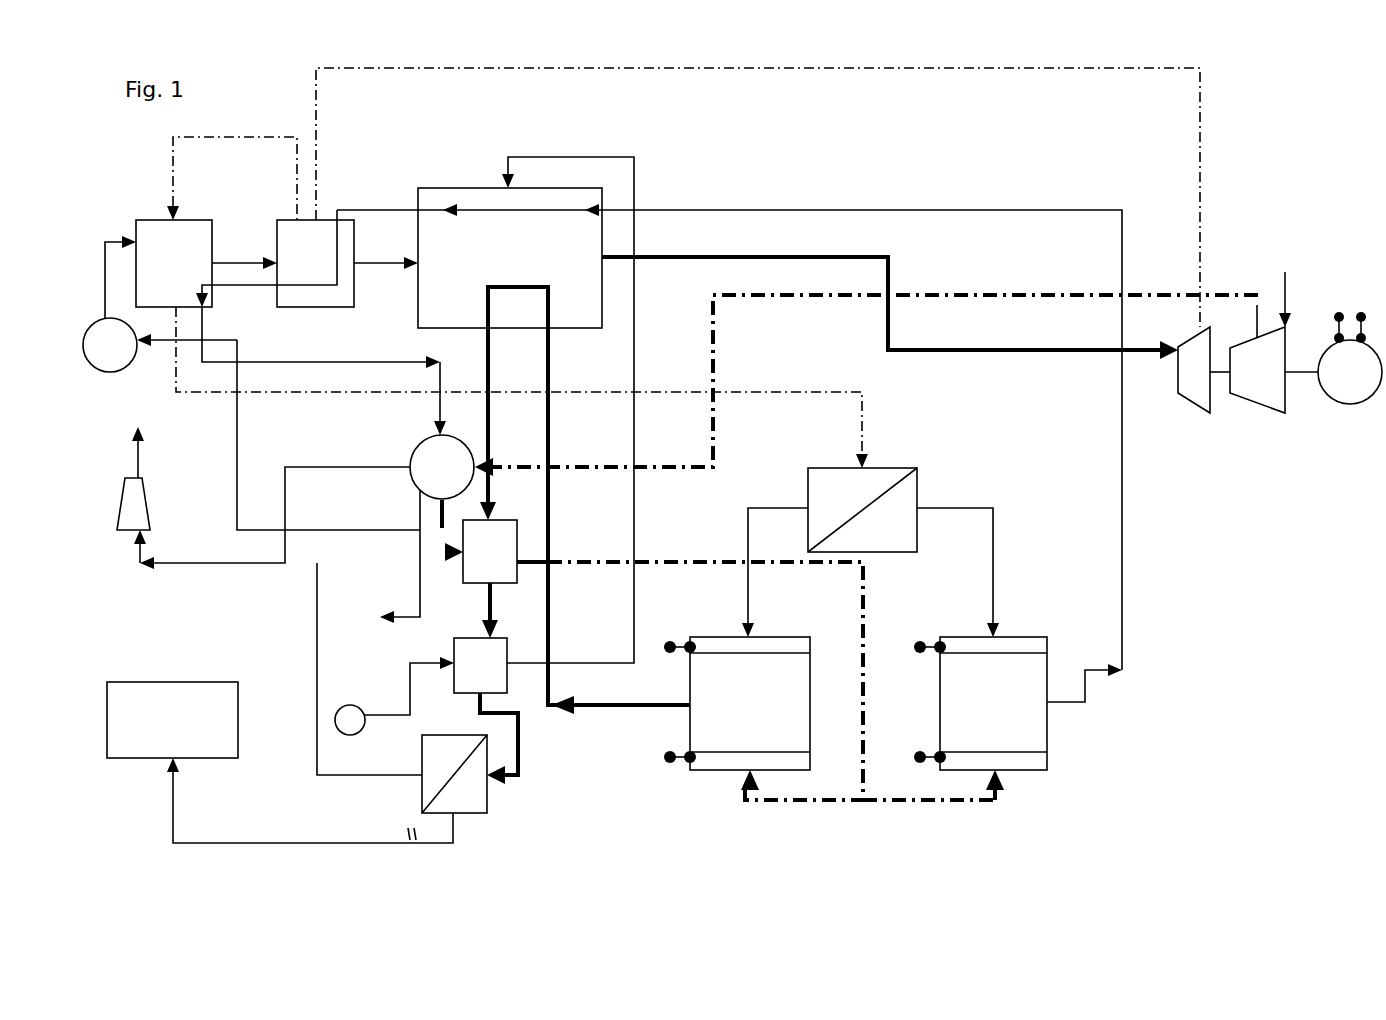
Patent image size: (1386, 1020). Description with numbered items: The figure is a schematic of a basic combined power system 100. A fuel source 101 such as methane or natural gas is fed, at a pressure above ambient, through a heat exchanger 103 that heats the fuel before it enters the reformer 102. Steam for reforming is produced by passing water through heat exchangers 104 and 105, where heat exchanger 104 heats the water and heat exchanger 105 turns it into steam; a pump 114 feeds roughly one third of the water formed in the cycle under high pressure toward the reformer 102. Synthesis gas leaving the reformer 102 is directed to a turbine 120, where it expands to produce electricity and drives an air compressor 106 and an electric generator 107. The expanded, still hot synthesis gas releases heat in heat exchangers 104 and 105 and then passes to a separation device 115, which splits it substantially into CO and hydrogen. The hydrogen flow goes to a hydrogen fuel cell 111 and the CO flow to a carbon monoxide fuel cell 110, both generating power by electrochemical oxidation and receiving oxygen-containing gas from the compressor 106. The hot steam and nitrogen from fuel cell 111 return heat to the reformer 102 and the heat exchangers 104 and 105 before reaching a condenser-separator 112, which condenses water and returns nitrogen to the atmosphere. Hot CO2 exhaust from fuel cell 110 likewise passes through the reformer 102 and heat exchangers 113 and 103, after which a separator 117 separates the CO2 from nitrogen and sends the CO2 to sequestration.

The combined power system 100 is at (732, 490).
The fuel source 101 is at (350, 720).
The reformer 102 is at (510, 258).
The heat exchanger 103 is at (480, 665).
The heat exchanger 104 is at (174, 263).
The heat exchanger 105 is at (315, 263).
The air compressor 106 is at (1257, 370).
The electric generator 107 is at (1350, 358).
The carbon monoxide fuel cell 110 is at (750, 703).
The hydrogen fuel cell 111 is at (993, 703).
The condenser-separator 112 is at (442, 467).
The heat exchanger 113 is at (490, 551).
The pump 114 is at (110, 345).
The separation device 115 is at (862, 510).
The separator 117 is at (454, 774).
The turbine 120 is at (1195, 370).